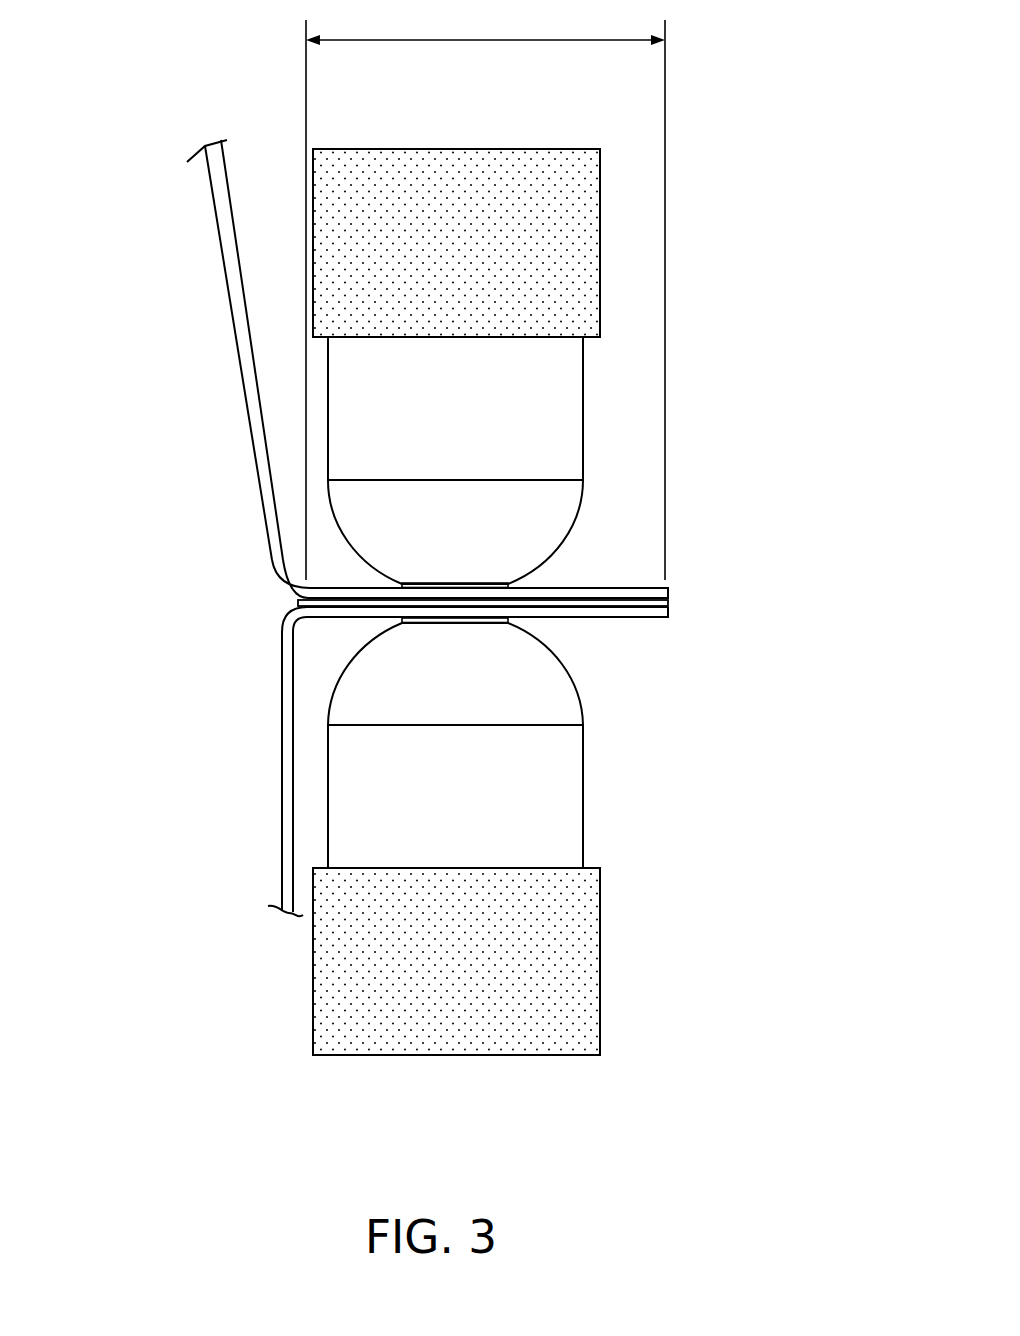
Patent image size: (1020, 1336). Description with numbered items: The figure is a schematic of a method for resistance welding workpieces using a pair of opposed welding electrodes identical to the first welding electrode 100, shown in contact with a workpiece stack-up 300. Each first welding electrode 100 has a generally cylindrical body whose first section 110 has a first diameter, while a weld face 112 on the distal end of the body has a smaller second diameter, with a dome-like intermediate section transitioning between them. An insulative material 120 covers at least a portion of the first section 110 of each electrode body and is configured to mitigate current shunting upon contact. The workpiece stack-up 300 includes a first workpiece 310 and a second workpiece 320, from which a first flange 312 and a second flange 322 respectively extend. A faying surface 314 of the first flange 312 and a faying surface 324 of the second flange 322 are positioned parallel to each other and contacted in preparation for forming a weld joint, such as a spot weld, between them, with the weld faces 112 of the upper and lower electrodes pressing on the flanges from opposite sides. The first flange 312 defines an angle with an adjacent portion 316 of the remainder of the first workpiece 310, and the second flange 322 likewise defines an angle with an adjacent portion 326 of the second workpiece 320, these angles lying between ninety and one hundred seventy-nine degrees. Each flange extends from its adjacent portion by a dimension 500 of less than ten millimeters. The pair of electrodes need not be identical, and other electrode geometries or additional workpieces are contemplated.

The first welding electrode 100 is at (537, 602).
The first section 110 is at (584, 441).
The weld face 112 is at (490, 584).
The insulative material 120 is at (600, 247).
The workpiece stack-up 300 is at (435, 528).
The first workpiece 310 is at (379, 369).
The first flange 312 is at (565, 588).
The faying surface 314 is at (622, 600).
The adjacent portion 316 is at (239, 355).
The second workpiece 320 is at (461, 761).
The second flange 322 is at (565, 612).
The faying surface 324 is at (640, 607).
The adjacent portion 326 is at (282, 722).
The dimension 500 is at (485, 294).